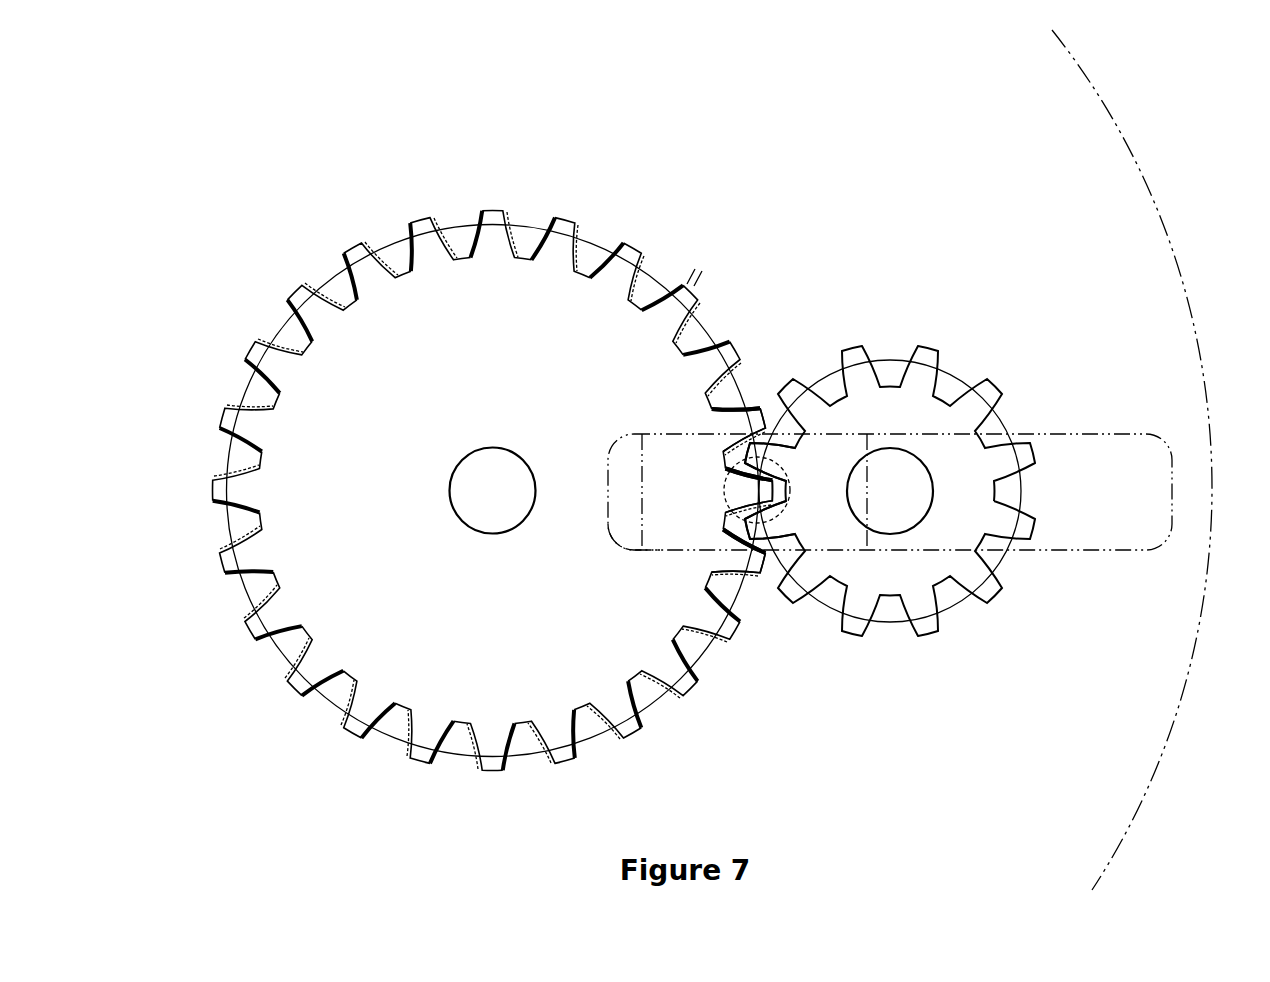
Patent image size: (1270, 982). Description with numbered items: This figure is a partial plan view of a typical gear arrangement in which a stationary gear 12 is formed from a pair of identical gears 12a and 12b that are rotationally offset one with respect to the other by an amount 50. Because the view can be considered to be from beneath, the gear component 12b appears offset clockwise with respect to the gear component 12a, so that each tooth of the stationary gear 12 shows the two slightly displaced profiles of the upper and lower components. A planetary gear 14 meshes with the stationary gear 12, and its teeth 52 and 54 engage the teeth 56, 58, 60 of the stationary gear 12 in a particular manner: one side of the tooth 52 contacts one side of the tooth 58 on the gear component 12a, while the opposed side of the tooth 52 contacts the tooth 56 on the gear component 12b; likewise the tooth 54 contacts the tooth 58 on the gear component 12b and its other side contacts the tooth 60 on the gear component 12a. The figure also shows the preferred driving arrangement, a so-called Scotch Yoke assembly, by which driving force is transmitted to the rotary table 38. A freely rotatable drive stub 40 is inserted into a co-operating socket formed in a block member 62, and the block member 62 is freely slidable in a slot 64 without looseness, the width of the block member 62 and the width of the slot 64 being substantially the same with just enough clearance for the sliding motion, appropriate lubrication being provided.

The stationary gear 12 is at (520, 404).
The upper gear component 12a is at (613, 250).
The lower gear component 12b is at (522, 225).
The planetary gear 14 is at (957, 506).
The rotary table 38 is at (1183, 364).
The drive stub 40 is at (792, 497).
The rotational offset amount 50 is at (672, 258).
The planetary gear tooth 52 is at (774, 455).
The planetary gear tooth 54 is at (774, 528).
The stationary gear tooth 56 is at (741, 426).
The stationary gear tooth 58 is at (741, 492).
The stationary gear tooth 60 is at (739, 562).
The block member 62 is at (657, 543).
The slot 64 is at (1071, 464).